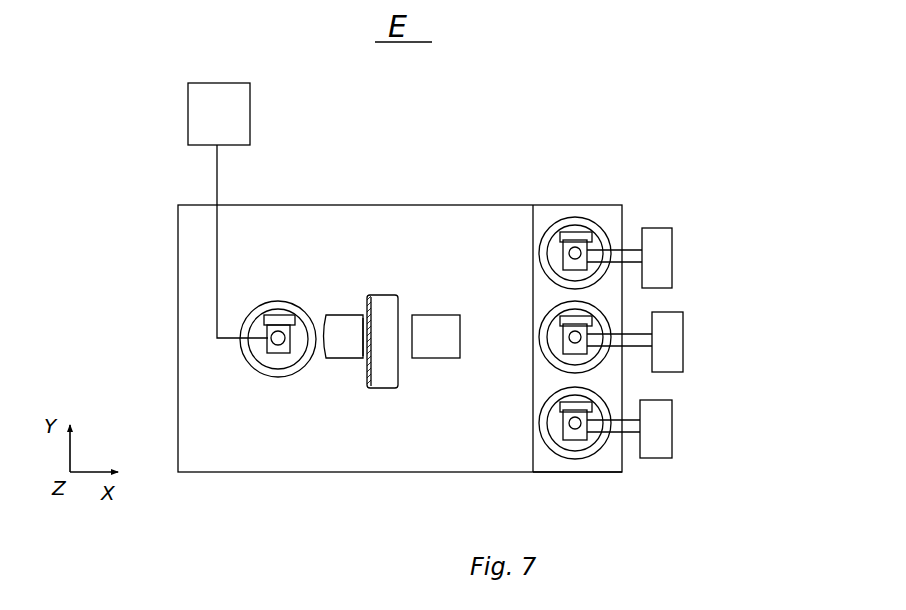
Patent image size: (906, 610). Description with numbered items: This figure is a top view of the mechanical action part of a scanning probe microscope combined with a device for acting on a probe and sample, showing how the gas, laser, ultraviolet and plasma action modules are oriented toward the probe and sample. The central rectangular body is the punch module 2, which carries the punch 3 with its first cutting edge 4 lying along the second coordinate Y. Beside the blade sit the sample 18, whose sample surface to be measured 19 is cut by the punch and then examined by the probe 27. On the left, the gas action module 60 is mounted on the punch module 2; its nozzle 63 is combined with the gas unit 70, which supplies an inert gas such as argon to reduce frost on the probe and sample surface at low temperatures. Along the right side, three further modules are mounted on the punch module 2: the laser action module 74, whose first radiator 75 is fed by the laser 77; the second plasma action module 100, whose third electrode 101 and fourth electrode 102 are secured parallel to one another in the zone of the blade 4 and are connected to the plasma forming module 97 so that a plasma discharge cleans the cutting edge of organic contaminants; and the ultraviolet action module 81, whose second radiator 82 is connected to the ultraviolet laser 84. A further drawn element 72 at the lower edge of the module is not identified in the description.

The punch module 2 is at (192, 242).
The punch 3 is at (393, 305).
The first cutting edge 4 is at (375, 378).
The sample 18 is at (338, 343).
The sample surface to be measured 19 is at (362, 327).
The probe 27 is at (443, 333).
The gas action module 60 is at (269, 306).
The nozzle 63 is at (289, 322).
The gas unit 70 is at (210, 103).
The roller module 72 is at (560, 473).
The laser action module 74 is at (608, 230).
The first radiator 75 is at (575, 335).
The laser 77 is at (660, 240).
The ultraviolet action module 81 is at (616, 403).
The second radiator 82 is at (533, 333).
The ultraviolet laser 84 is at (660, 418).
The plasma forming module 97 is at (660, 325).
The second plasma action module 100 is at (614, 318).
The third electrode 101 is at (575, 253).
The fourth electrode 102 is at (566, 330).